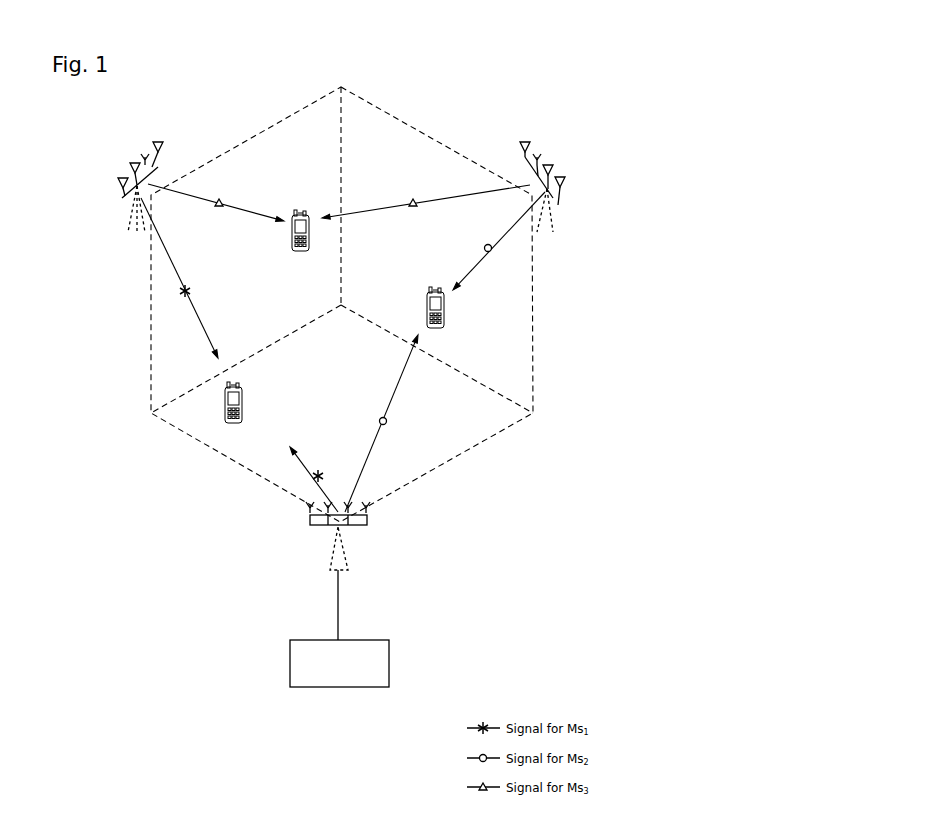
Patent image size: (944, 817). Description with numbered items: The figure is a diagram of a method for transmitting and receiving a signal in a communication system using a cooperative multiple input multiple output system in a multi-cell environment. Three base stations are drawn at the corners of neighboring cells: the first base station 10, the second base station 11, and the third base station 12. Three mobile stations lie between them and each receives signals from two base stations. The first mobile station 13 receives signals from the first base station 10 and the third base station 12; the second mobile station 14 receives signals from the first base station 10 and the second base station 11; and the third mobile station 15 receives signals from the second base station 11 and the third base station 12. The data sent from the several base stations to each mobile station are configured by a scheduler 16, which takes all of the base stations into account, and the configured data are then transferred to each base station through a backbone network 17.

The base station BS1 10 is at (392, 551).
The base station BS2 11 is at (583, 202).
The base station BS3 12 is at (100, 248).
The mobile station MS1 13 is at (268, 401).
The mobile station MS2 14 is at (470, 313).
The mobile station MS3 15 is at (265, 173).
The scheduler 16 is at (341, 680).
The backbone network 17 is at (580, 648).